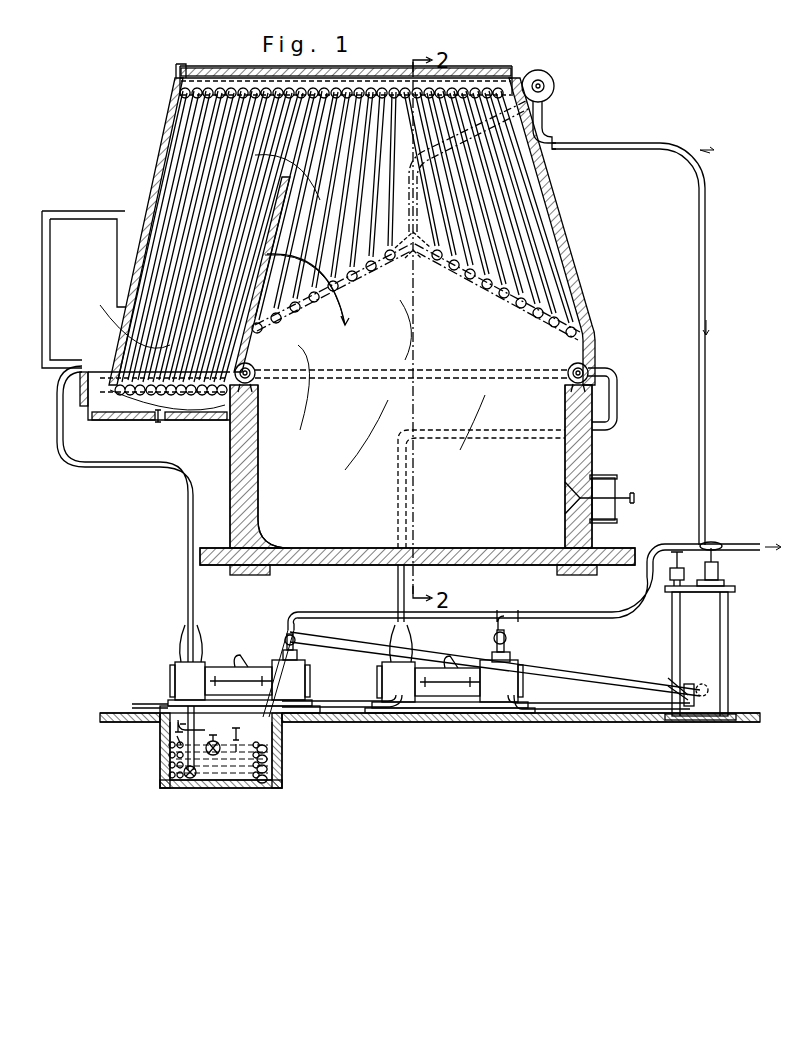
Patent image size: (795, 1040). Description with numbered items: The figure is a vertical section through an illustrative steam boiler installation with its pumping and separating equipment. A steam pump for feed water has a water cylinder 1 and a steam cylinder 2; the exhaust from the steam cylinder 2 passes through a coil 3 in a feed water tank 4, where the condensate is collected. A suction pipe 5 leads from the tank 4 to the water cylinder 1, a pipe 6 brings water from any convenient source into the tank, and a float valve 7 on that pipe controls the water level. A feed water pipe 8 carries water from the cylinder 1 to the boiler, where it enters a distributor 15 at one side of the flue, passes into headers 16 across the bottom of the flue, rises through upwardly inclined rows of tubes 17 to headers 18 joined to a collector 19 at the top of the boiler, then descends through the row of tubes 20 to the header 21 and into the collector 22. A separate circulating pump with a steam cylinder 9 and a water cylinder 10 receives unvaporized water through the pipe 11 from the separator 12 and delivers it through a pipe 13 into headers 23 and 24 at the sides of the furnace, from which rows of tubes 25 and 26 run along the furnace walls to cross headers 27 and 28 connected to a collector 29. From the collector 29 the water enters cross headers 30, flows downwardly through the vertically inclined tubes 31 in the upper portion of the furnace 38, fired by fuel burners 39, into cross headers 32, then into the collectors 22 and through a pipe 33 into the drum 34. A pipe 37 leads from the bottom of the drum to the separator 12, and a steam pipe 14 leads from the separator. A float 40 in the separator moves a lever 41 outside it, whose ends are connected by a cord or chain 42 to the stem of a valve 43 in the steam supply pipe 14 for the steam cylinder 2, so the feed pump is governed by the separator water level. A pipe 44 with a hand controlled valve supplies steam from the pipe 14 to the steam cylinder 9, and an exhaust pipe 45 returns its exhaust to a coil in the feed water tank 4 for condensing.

The water cylinder 1 is at (190, 675).
The steam cylinder 2 is at (300, 680).
The coil 3 is at (282, 752).
The feed water tank 4 is at (282, 764).
The suction pipe 5 is at (186, 728).
The water supply pipe 6 is at (140, 703).
The float valve 7 is at (212, 755).
The feed water pipe 8 is at (186, 521).
The steam cylinder 9 is at (506, 678).
The water cylinder 10 is at (392, 702).
The pipe 11 is at (606, 708).
The separator 12 is at (716, 626).
The pipe 13 is at (396, 570).
The steam pipe 14 is at (612, 615).
The distributor 15 is at (146, 380).
The headers 16 is at (176, 381).
The tubes 17 is at (195, 172).
The headers 18 is at (222, 84).
The collector 19 is at (238, 84).
The tubes 20 is at (310, 112).
The header 21 is at (267, 324).
The collector 22 is at (297, 310).
The header 23 is at (567, 370).
The header 24 is at (272, 368).
The tubes 25 is at (545, 236).
The tubes 26 is at (347, 325).
The cross header 27 is at (504, 86).
The cross header 28 is at (338, 84).
The collector 29 is at (448, 82).
The cross headers 30 is at (490, 70).
The tubes 31 is at (500, 203).
The cross headers 32 is at (437, 257).
The pipe 33 is at (493, 128).
The drum 34 is at (554, 82).
The pipe 37 is at (650, 143).
The furnace 38 is at (417, 480).
The fuel burners 39 is at (606, 480).
The float 40 is at (692, 690).
The lever 41 is at (668, 682).
The cord or chain 42 is at (566, 686).
The valve 43 is at (283, 640).
The pipe 44 is at (508, 626).
The exhaust pipe 45 is at (338, 722).